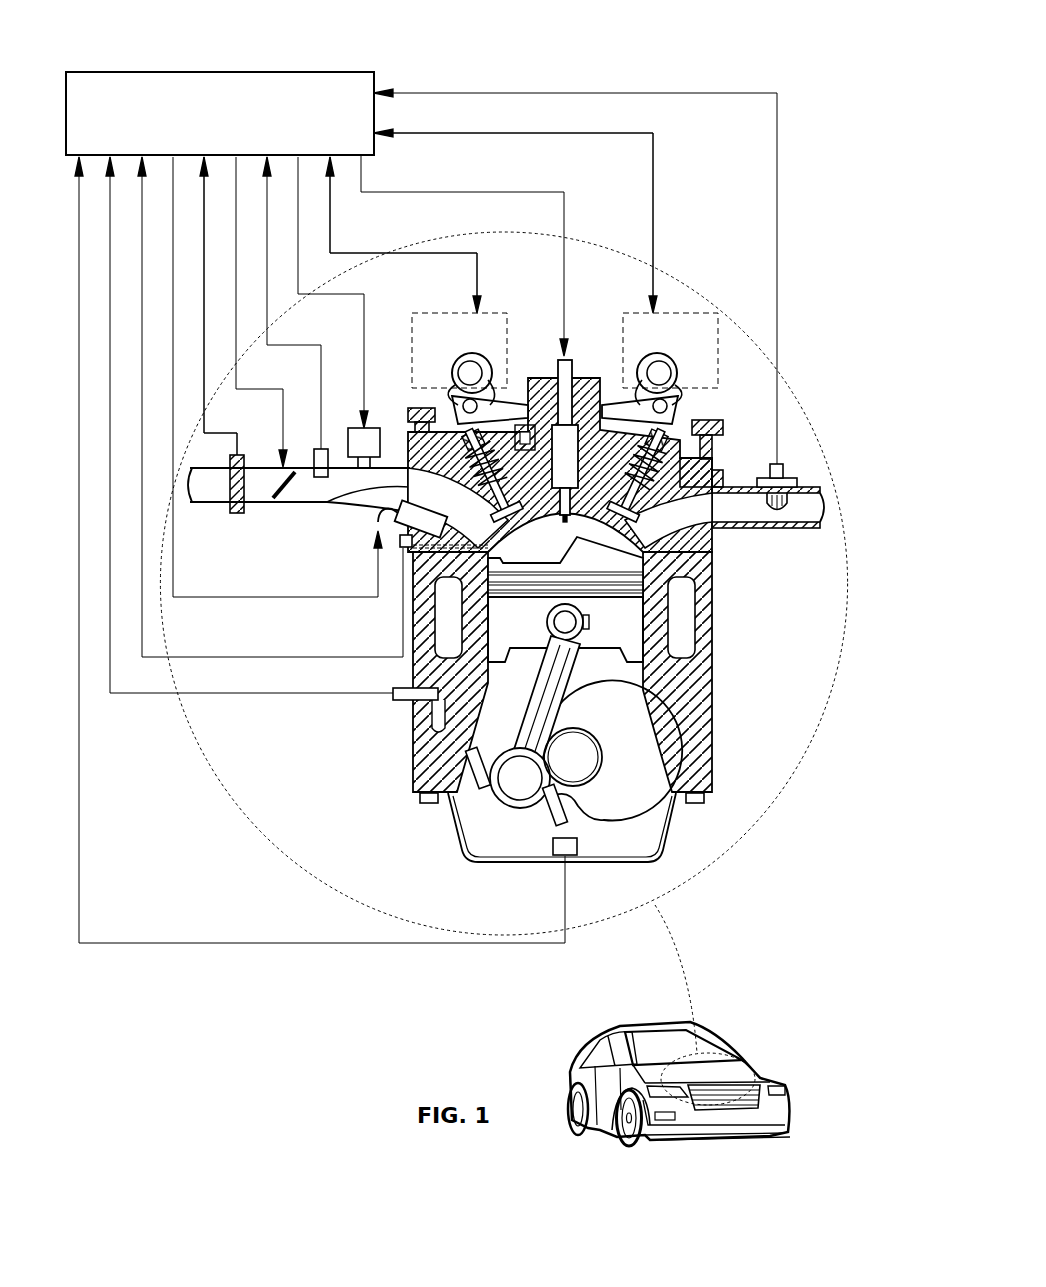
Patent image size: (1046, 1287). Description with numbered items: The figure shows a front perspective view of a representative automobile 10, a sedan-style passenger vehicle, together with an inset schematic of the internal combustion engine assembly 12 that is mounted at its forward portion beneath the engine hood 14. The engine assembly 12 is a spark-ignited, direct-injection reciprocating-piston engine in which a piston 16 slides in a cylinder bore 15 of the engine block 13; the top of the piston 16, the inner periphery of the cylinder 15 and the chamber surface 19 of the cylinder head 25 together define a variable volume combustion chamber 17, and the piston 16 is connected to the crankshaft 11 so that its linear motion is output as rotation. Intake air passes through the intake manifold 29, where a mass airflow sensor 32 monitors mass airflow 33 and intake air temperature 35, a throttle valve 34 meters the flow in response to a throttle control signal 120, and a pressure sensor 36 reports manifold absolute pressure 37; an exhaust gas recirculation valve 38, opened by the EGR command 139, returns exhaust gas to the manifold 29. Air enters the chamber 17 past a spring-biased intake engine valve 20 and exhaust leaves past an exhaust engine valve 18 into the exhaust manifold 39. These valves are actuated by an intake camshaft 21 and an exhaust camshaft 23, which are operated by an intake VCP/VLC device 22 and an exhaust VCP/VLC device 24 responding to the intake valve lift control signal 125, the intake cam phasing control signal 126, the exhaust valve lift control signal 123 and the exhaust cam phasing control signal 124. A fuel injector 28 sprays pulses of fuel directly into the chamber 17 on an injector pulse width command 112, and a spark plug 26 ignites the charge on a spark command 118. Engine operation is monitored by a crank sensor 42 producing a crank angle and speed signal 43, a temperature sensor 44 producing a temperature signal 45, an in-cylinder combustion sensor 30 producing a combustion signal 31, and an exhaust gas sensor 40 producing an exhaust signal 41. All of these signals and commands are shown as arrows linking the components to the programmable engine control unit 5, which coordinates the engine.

The programmable engine control unit 5 is at (225, 126).
The automobile 10 is at (733, 1009).
The crankshaft 11 is at (617, 805).
The internal combustion engine assembly 12 is at (172, 49).
The engine block 13 is at (692, 766).
The engine hood 14 is at (755, 1074).
The cylinder bore 15 is at (628, 590).
The reciprocating piston 16 is at (625, 622).
The combustion chamber 17 is at (546, 555).
The exhaust engine valve 18 is at (740, 526).
The chamber surface 19 is at (705, 560).
The intake engine valve 20 is at (345, 501).
The intake camshaft 21 is at (463, 373).
The intake variable cam phasing/variable lift control device 22 is at (462, 343).
The exhaust camshaft 23 is at (667, 373).
The exhaust variable cam phasing/variable lift control device 24 is at (700, 343).
The cylinder head 25 is at (712, 456).
The spark plug 26 is at (574, 366).
The fuel injector 28 is at (375, 524).
The intake manifold 29 is at (418, 500).
The in-cylinder combustion sensor 30 is at (405, 549).
The combustion sensor signal 31 is at (283, 651).
The mass airflow sensor 32 is at (240, 513).
The mass airflow 33 is at (273, 426).
The throttle valve 34 is at (284, 494).
The intake air temperature 35 is at (220, 306).
The pressure sensor 36 is at (315, 450).
The manifold absolute pressure 37 is at (332, 338).
The exhaust gas recirculation valve 38 is at (350, 428).
The exhaust manifold 39 is at (740, 487).
The exhaust gas sensor 40 is at (790, 478).
The exhaust gas sensor signal 41 is at (766, 91).
The crank sensor 42 is at (577, 851).
The crank angle/speed signal 43 is at (292, 938).
The temperature sensor 44 is at (400, 701).
The temperature signal 45 is at (332, 688).
The injector pulse width command 112 is at (253, 590).
The spark command 118 is at (569, 186).
The throttle control signal 120 is at (299, 383).
The exhaust valve lift control signal 123 is at (674, 130).
The exhaust cam phasing control signal 124 is at (513, 219).
The intake valve lift control signal 125 is at (451, 248).
The intake cam phasing control signal 126 is at (403, 231).
The EGR command 139 is at (407, 286).